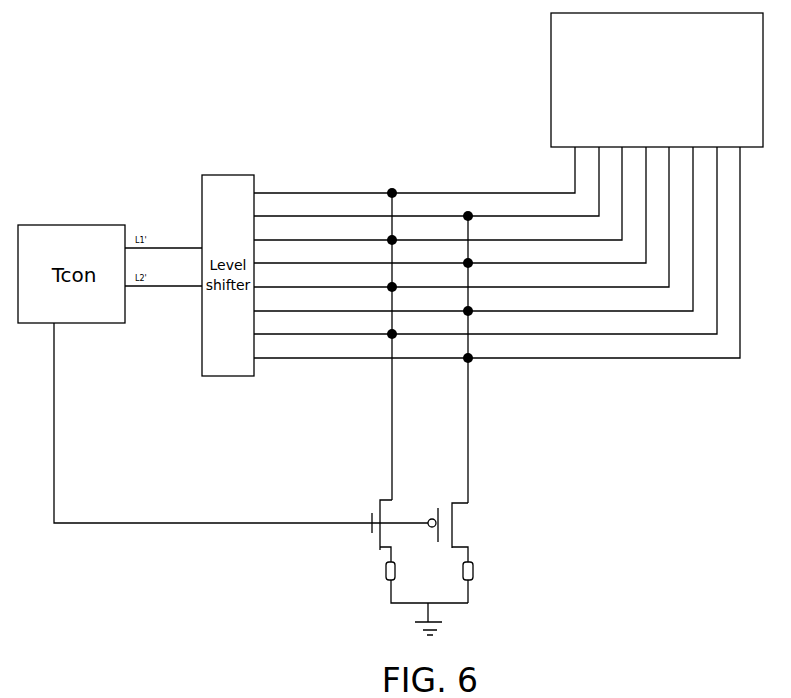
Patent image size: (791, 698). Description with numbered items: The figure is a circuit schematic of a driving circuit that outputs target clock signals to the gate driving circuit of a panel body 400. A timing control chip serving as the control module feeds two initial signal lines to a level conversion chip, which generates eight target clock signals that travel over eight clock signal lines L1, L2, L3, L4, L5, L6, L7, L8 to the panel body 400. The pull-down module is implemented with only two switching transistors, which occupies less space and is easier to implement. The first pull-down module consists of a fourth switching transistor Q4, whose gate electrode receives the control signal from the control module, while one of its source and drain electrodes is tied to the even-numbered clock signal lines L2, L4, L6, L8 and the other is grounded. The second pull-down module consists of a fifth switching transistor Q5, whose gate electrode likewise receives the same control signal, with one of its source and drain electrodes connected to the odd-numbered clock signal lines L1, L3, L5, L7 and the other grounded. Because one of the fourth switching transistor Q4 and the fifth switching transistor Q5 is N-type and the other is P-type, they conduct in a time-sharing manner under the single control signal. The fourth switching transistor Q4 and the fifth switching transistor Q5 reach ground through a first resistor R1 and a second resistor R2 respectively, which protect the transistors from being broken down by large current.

The panel body 400 is at (657, 80).
The clock signal line L1 is at (414, 170).
The clock signal line L2 is at (426, 181).
The clock signal line L3 is at (438, 193).
The clock signal line L4 is at (450, 205).
The clock signal line L5 is at (461, 217).
The clock signal line L6 is at (473, 229).
The clock signal line L7 is at (485, 240).
The clock signal line L8 is at (497, 252).
The fourth switching transistor Q4 is at (440, 530).
The fifth switching transistor Q5 is at (367, 530).
The first resistor R1 is at (457, 571).
The second resistor R2 is at (376, 571).